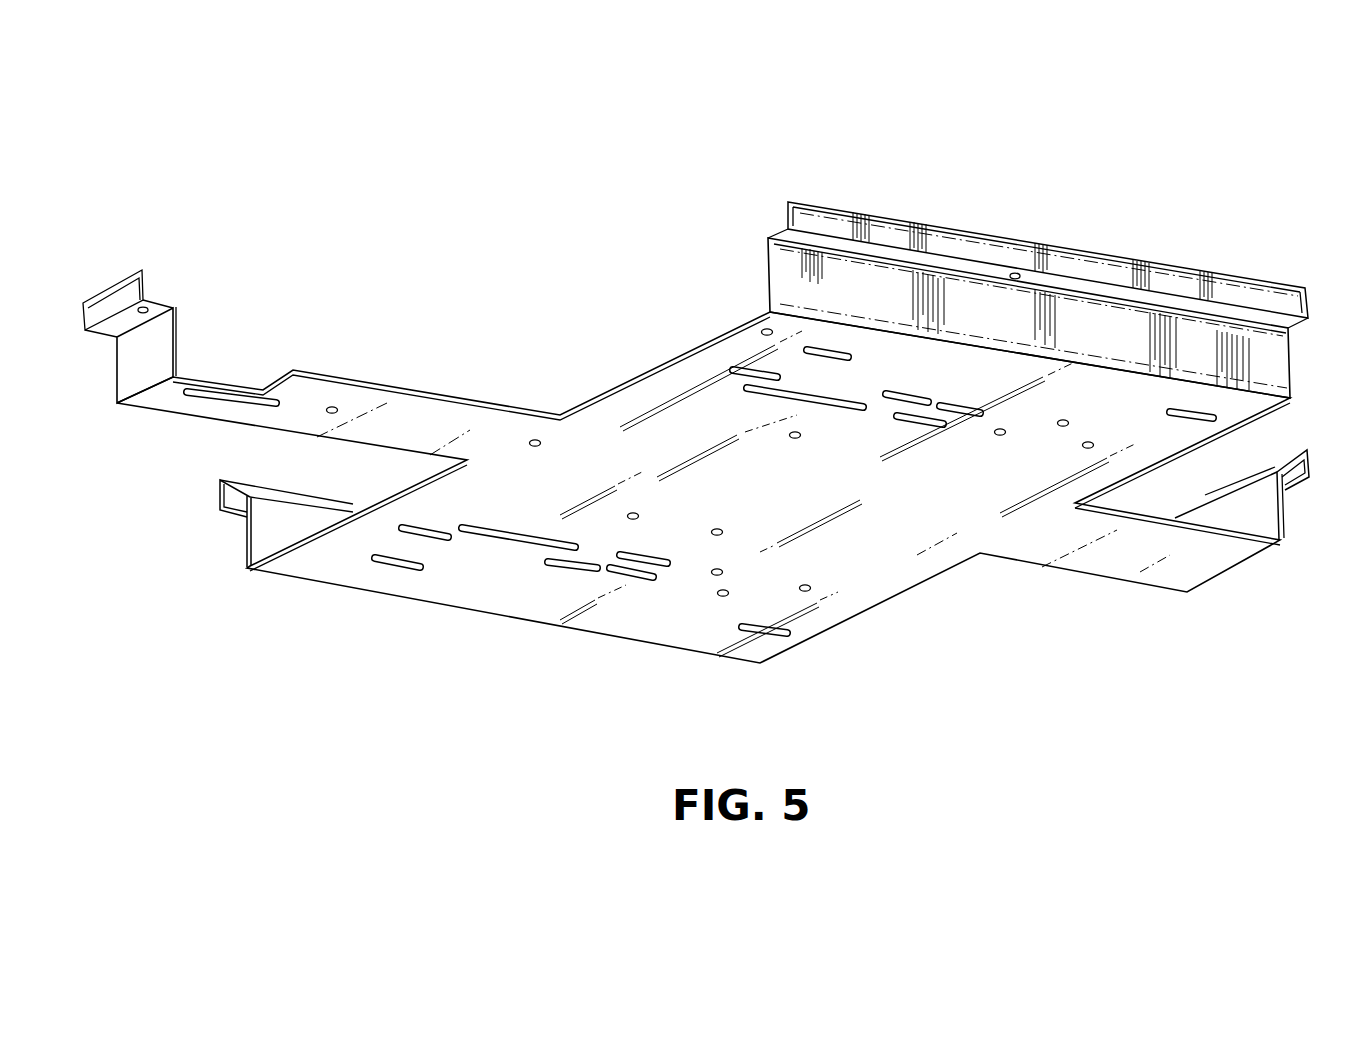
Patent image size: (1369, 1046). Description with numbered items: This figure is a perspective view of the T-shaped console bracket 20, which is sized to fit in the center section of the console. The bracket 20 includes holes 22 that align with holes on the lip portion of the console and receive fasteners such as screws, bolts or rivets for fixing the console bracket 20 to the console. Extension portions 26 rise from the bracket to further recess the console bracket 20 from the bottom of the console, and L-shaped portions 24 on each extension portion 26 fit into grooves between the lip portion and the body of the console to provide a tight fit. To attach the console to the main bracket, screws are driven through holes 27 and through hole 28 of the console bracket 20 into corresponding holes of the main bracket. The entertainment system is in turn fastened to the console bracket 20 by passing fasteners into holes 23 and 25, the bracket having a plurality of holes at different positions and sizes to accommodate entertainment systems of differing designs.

The console bracket 20 is at (867, 595).
The holes 22 is at (150, 302).
The holes 23 is at (517, 540).
The L-shaped portions 24 is at (780, 228).
The holes 25 is at (663, 560).
The extension portions 26 is at (1267, 353).
The holes 27 is at (791, 436).
The hole 28 is at (330, 411).